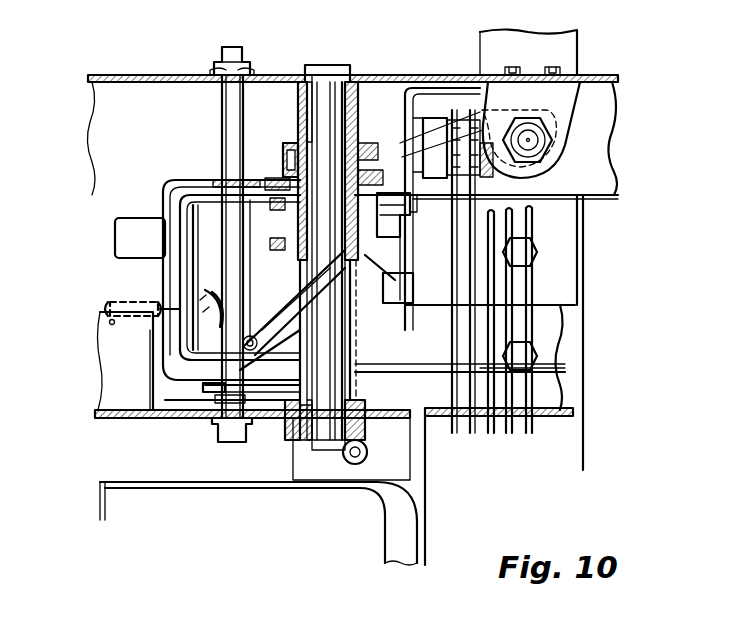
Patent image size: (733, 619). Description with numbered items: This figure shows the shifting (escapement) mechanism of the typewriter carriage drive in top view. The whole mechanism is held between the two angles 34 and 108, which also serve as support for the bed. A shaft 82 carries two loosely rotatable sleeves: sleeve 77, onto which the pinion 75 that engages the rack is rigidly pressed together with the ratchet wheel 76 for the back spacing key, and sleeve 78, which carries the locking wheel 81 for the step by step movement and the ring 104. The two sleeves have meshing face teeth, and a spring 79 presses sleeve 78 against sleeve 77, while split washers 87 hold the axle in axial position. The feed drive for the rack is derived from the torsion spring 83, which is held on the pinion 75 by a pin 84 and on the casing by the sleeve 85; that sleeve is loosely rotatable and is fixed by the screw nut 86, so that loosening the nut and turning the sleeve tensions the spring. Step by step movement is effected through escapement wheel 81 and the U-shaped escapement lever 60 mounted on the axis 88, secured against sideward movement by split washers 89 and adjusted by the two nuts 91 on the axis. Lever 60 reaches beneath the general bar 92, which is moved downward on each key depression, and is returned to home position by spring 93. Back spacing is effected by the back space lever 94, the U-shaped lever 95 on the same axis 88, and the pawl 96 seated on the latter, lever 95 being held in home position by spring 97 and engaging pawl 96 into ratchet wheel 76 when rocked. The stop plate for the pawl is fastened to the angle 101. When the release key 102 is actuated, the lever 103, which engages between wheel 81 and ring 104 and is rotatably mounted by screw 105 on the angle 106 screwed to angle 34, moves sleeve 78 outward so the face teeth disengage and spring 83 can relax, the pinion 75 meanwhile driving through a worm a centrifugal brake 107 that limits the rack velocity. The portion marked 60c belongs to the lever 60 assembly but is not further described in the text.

The angle 34 is at (135, 77).
The nuts 91 is at (213, 63).
The axis 88 is at (228, 53).
The spring 79 is at (298, 110).
The split washers 87 is at (303, 130).
The shaft 82 is at (340, 105).
The ring 104 is at (360, 143).
The angle 101 is at (423, 87).
The lever 103 is at (494, 140).
The angle 106 is at (567, 97).
The screw 105 is at (545, 142).
The escapement lever 60 is at (165, 192).
The ratchet wheel 76 is at (182, 199).
The sleeve 78 is at (283, 163).
The locking wheel 81 is at (225, 168).
The frame member 60c is at (135, 247).
The sleeve 77 is at (300, 213).
The pinion 75 is at (272, 253).
The spring 93 is at (100, 313).
The centrifugal brake 107 is at (205, 326).
The spring 97 is at (183, 347).
The lever 95 is at (173, 370).
The angle 108 is at (121, 421).
The split washers 89 is at (217, 386).
The sleeve 85 is at (287, 440).
The screw nut 86 is at (293, 425).
The torsion spring 83 is at (348, 323).
The pin 84 is at (368, 265).
The pawl 96 is at (395, 220).
The general bar 92 is at (560, 373).
The release key 102 is at (472, 430).
The back space lever 94 is at (492, 434).